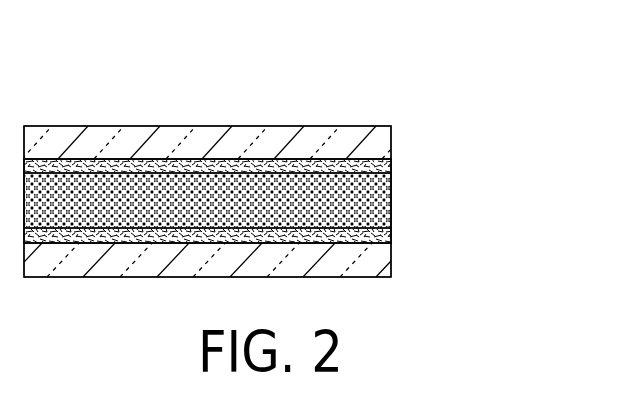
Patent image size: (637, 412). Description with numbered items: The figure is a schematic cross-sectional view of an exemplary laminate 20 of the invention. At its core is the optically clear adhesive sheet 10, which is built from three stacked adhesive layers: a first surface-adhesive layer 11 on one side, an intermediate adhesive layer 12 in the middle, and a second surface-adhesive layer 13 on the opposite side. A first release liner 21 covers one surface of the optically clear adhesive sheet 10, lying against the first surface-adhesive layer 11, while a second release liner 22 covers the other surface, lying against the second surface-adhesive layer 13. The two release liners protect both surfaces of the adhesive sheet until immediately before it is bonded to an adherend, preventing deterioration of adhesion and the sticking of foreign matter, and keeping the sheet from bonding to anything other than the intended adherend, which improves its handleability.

The laminate 20 is at (402, 110).
The optically clear adhesive sheet 10 is at (467, 158).
The first surface-adhesive layer 11 is at (390, 165).
The intermediate adhesive layer 12 is at (380, 203).
The second surface-adhesive layer 13 is at (388, 237).
The first release liner 21 is at (382, 141).
The second release liner 22 is at (380, 262).